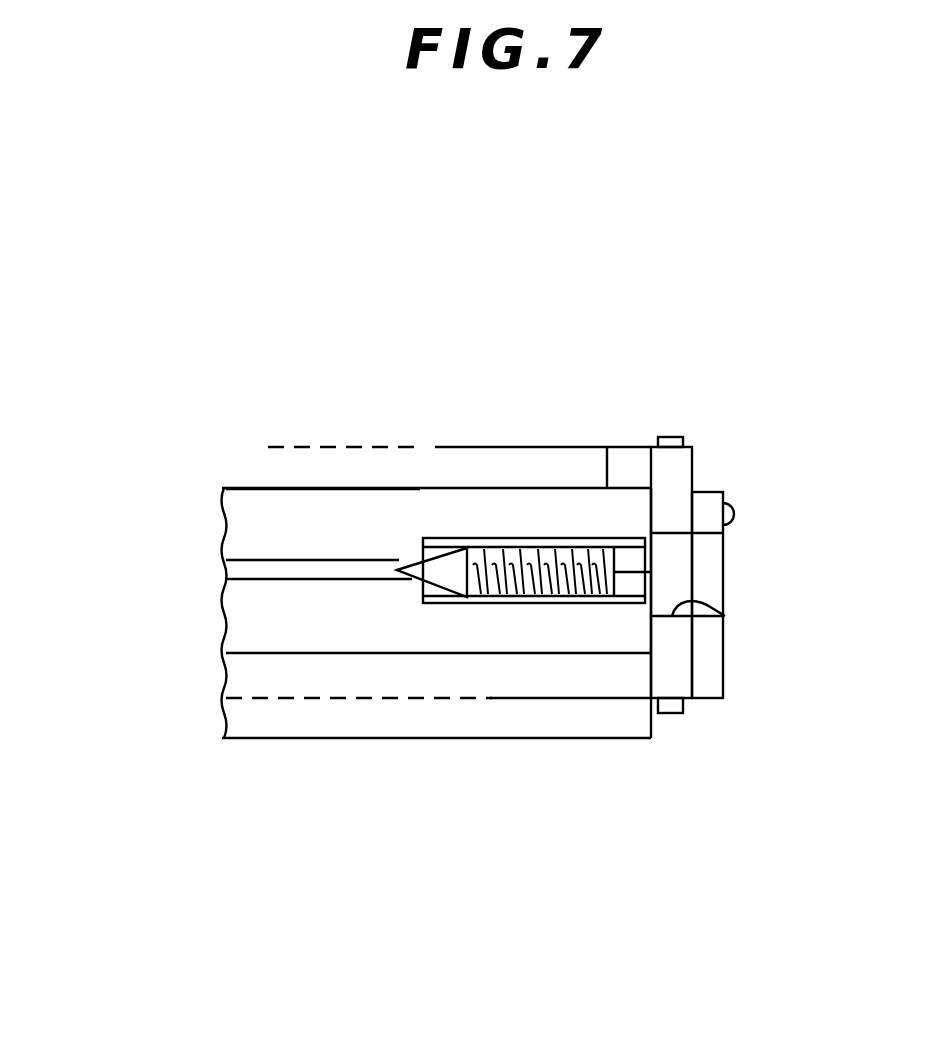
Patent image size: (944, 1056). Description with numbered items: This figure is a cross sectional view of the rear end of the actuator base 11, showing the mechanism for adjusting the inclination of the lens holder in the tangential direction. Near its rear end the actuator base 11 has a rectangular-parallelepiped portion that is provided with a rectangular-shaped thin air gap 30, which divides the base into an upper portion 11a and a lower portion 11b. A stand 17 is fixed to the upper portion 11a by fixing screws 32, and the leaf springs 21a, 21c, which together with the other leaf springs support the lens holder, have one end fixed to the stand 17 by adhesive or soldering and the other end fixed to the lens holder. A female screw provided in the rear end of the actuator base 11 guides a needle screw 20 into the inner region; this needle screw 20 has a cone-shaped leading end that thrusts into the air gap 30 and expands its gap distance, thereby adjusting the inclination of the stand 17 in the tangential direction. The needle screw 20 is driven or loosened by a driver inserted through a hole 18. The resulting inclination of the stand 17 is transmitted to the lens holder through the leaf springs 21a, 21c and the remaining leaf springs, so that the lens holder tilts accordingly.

The actuator base 11 is at (592, 723).
The upper portion 11a is at (275, 503).
The lower portion 11b is at (277, 632).
The stand 17 is at (697, 465).
The hole 18 is at (725, 616).
The needle screw 20 is at (651, 572).
The leaf spring 21a is at (477, 447).
The leaf spring 21c is at (490, 698).
The air gap 30 is at (227, 568).
The fixing screw 32 is at (735, 517).